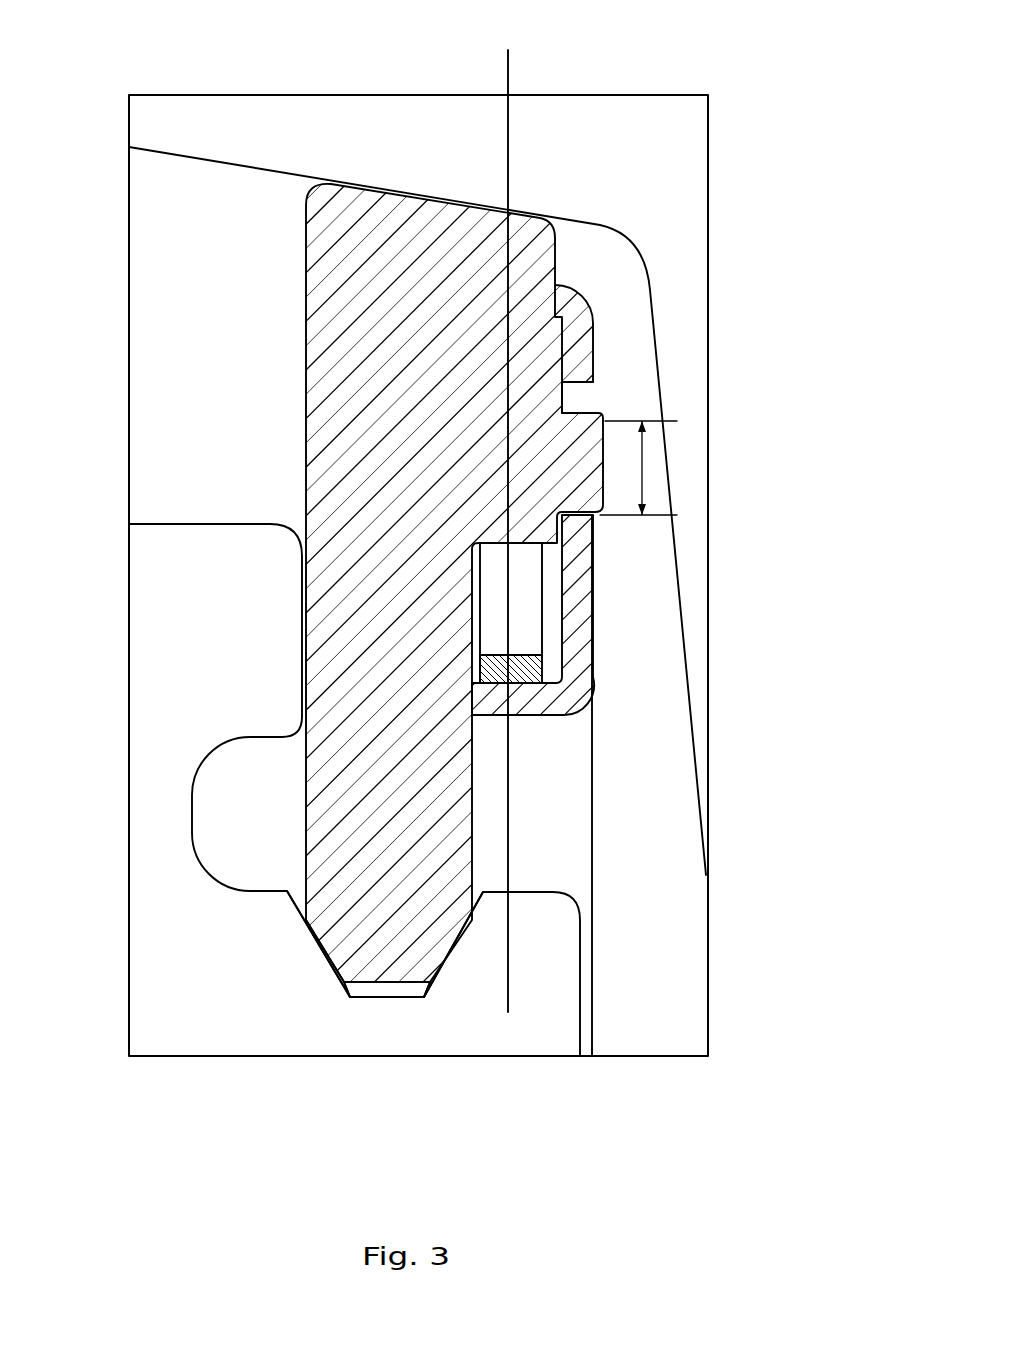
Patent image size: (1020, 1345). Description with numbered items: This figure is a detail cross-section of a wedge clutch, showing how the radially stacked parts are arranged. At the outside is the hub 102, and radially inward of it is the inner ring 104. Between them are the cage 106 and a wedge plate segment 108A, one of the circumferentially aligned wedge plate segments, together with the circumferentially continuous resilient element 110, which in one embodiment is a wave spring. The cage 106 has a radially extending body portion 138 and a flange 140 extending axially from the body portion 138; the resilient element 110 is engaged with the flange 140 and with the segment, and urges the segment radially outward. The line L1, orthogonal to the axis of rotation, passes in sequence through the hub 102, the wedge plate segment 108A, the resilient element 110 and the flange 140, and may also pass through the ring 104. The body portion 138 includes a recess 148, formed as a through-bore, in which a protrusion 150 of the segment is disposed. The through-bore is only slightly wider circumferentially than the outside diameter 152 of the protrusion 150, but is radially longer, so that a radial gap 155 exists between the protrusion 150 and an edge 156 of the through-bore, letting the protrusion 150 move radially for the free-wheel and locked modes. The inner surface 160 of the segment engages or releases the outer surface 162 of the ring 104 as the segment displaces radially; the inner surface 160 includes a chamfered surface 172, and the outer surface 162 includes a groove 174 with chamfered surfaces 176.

The hub 102 is at (362, 120).
The inner ring 104 is at (177, 524).
The cage 106 is at (583, 283).
The wedge plate segment 108A is at (303, 228).
The line L1 is at (507, 76).
The resilient element 110 is at (593, 685).
The body portion 138 is at (595, 628).
The flange 140 is at (533, 718).
The recess 148 is at (582, 405).
The protrusion 150 is at (597, 517).
The outside diameter 152 is at (645, 470).
The radial gap 155 is at (598, 382).
The edge 156 is at (593, 323).
The inner surface 160 is at (303, 943).
The outer surface 162 is at (385, 1008).
The chamfered surface 172 is at (327, 963).
The groove 174 is at (367, 990).
The chamfered surface 176 is at (343, 990).